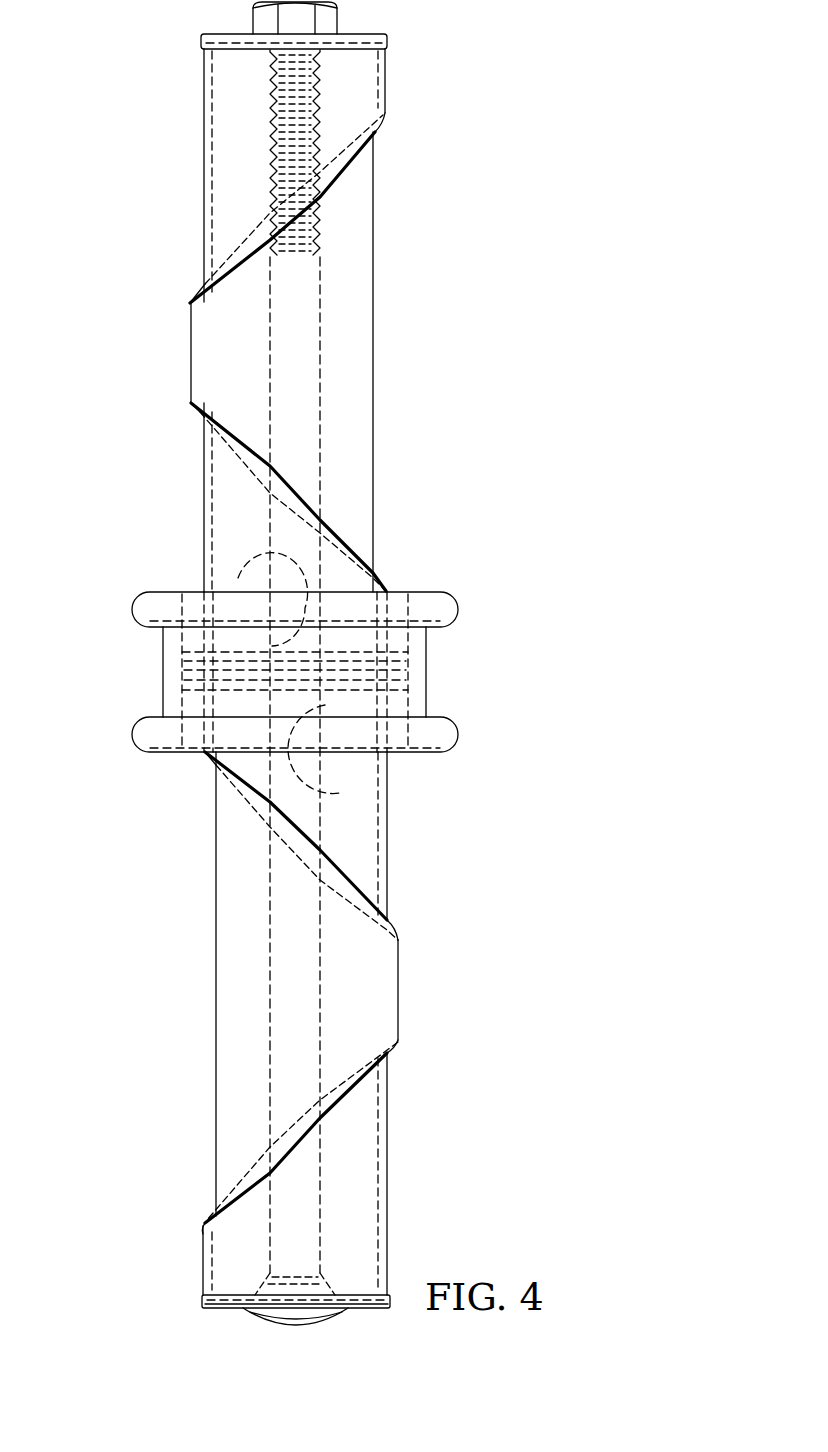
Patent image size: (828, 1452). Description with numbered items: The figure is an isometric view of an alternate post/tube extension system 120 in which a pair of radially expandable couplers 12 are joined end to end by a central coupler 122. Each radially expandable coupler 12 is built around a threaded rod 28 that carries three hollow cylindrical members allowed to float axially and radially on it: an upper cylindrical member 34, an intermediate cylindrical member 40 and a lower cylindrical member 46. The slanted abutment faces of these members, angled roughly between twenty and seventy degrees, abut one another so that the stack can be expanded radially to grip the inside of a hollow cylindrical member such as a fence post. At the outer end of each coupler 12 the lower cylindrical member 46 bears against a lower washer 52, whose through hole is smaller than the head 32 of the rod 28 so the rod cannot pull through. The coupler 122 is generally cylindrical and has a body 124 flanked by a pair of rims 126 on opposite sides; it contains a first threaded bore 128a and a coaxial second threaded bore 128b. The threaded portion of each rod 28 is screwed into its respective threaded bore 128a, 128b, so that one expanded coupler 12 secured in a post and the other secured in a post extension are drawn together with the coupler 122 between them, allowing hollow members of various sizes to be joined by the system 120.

The radially expandable coupler 12 is at (424, 242).
The rod 28 is at (270, 365).
The head 32 is at (262, 1322).
The upper cylindrical member 34 is at (205, 505).
The intermediate cylindrical member 40 is at (373, 355).
The lower cylindrical member 46 is at (205, 168).
The lower washer 52 is at (202, 1300).
The post/tube extension system 120 is at (640, 238).
The coupler 122 is at (472, 636).
The body 124 is at (163, 675).
The rim 126 is at (133, 607).
The first threaded bore 128a is at (340, 793).
The second threaded bore 128b is at (238, 578).